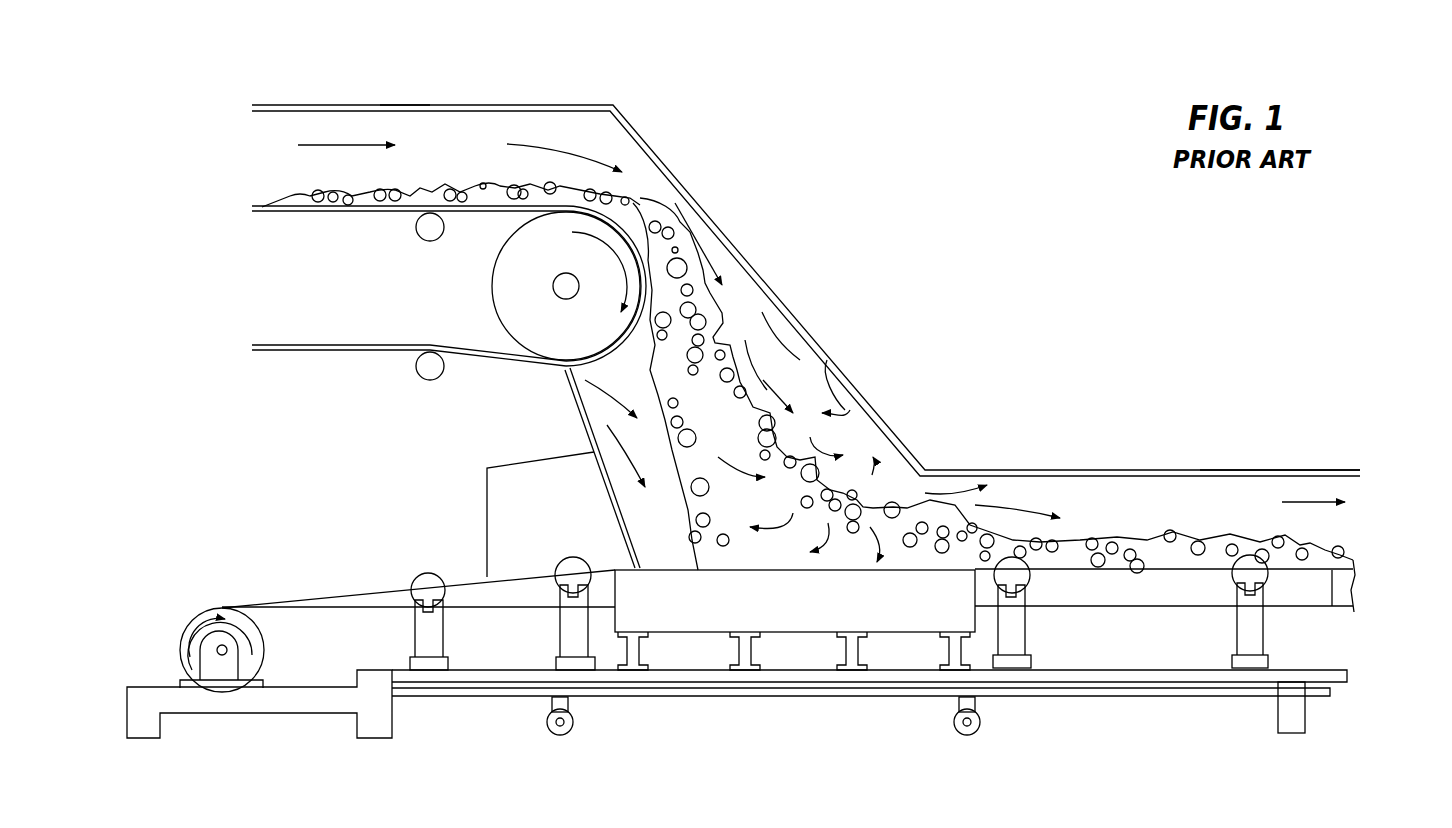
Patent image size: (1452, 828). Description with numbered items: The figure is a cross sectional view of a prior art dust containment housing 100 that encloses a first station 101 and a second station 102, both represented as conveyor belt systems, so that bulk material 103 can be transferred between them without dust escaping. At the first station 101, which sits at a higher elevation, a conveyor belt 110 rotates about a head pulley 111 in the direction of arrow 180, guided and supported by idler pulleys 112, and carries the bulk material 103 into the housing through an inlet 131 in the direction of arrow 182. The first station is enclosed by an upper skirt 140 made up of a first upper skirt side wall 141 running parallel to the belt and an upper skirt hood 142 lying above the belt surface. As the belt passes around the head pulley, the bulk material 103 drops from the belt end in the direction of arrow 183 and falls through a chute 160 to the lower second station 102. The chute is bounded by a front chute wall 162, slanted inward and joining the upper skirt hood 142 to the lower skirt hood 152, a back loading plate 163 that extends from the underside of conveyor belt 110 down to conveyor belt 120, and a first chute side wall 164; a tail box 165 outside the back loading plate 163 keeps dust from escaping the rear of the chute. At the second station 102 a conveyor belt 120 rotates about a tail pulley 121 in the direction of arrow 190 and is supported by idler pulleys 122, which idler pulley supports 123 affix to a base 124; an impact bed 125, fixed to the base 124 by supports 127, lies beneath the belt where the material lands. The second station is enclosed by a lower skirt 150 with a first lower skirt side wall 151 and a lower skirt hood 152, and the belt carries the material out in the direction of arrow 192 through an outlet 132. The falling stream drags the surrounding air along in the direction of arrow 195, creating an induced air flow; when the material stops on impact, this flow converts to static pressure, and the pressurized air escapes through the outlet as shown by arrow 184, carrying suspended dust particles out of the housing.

The dust containment housing 100 is at (605, 70).
The first station 101 is at (262, 295).
The second station 102 is at (1353, 553).
The bulk material 103 is at (645, 207).
The conveyor belt 110 is at (318, 213).
The head pulley 111 is at (517, 296).
The idler pulleys 112 is at (428, 365).
The conveyor belt 120 is at (362, 590).
The tail pulley 121 is at (248, 635).
The idler pulleys 122 is at (438, 592).
The idler pulley supports 123 is at (572, 630).
The base 124 is at (1337, 673).
The impact bed 125 is at (838, 611).
The supports 127 is at (745, 655).
The inlet 131 is at (248, 170).
The outlet 132 is at (1348, 524).
The upper skirt 140 is at (372, 105).
The first upper skirt side wall 141 is at (473, 153).
The upper skirt hood 142 is at (403, 105).
The lower skirt 150 is at (988, 438).
The first lower skirt side wall 151 is at (1158, 510).
The lower skirt hood 152 is at (1295, 469).
The chute 160 is at (822, 392).
The front chute wall 162 is at (827, 360).
The back loading plate 163 is at (583, 430).
The first chute side wall 164 is at (762, 312).
The tail box 165 is at (487, 520).
The arrow 180 is at (610, 258).
The arrow 182 is at (322, 145).
The arrow 183 is at (700, 240).
The arrow 184 is at (1022, 505).
The arrow 190 is at (190, 620).
The arrow 192 is at (1274, 503).
The arrow 195 is at (753, 362).